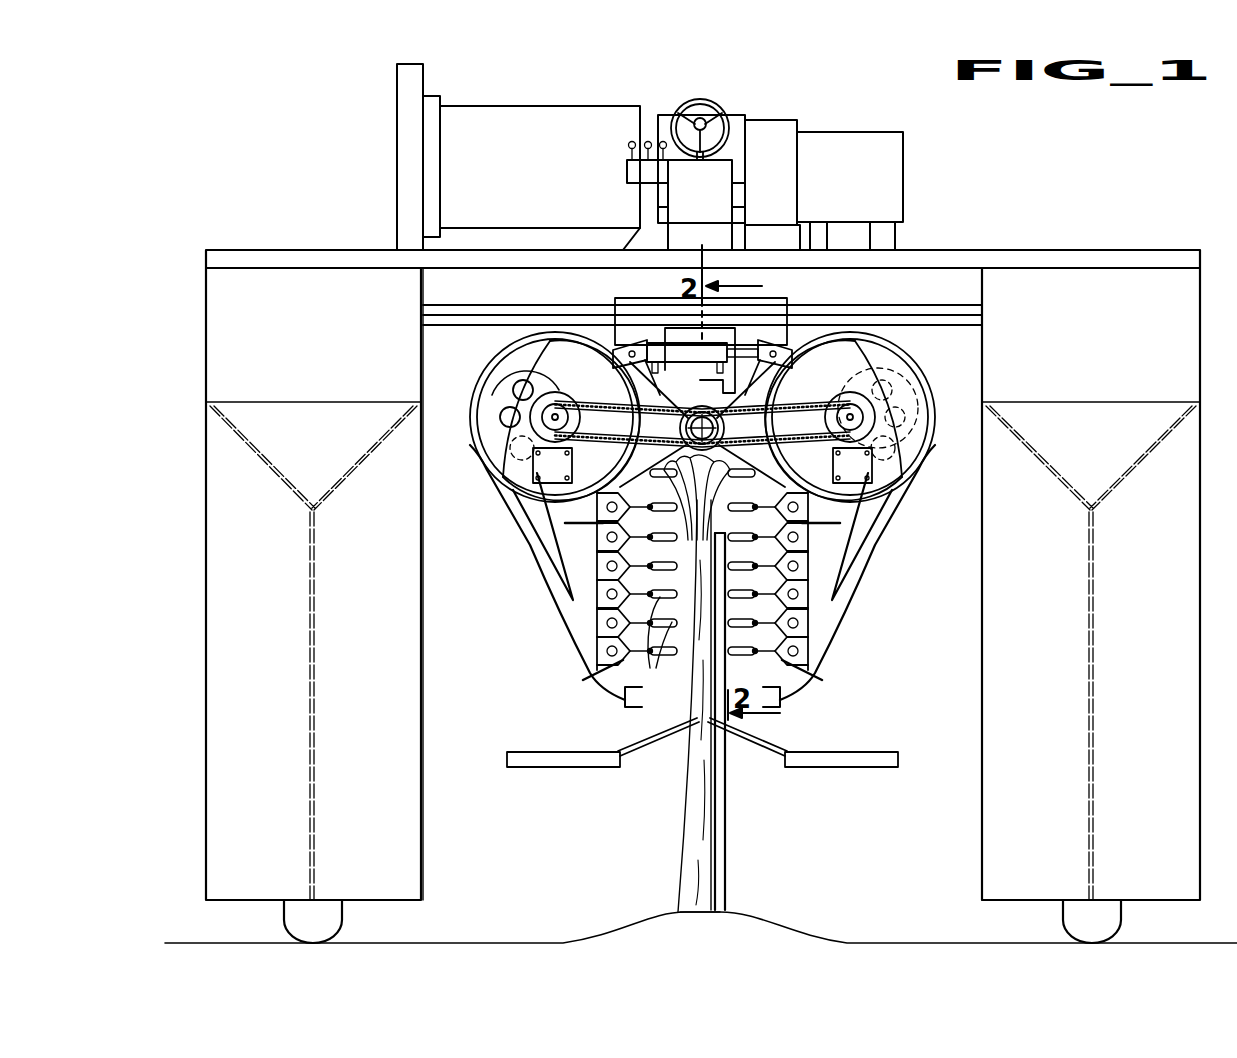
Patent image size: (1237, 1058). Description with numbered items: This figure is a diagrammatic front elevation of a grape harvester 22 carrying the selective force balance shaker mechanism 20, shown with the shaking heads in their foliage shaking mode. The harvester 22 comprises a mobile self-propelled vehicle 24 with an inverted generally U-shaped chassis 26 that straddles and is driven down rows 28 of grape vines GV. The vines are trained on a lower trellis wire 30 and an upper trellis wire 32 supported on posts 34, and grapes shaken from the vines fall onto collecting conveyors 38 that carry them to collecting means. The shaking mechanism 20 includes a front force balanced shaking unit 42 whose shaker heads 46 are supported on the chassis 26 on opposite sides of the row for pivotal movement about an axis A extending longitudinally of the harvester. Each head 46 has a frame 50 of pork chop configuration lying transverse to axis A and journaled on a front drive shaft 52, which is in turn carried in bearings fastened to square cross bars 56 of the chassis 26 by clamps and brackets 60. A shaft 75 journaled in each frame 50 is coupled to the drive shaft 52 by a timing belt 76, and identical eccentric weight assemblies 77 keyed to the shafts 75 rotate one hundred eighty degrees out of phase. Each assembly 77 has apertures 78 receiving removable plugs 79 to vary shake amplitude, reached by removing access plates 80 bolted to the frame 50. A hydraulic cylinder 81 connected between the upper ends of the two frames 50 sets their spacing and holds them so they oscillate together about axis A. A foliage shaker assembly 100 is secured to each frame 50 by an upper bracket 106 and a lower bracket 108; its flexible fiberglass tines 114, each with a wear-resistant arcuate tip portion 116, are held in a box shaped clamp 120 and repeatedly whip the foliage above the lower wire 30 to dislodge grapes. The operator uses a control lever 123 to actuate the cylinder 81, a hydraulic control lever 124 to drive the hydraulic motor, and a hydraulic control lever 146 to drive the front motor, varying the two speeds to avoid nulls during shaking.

The selective force balance shaker mechanism 20 is at (960, 353).
The grape harvester 22 is at (942, 193).
The mobile self-propelled vehicle 24 is at (1105, 247).
The chassis 26 is at (215, 331).
The rows 28 is at (677, 901).
The lower trellis wire 30 is at (782, 700).
The upper trellis wire 32 is at (720, 530).
The posts 34 is at (726, 825).
The collecting conveyors 38 is at (507, 757).
The front force balanced shaking unit 42 is at (936, 391).
The front shaker heads 46 is at (550, 618).
The frame 50 is at (530, 554).
The front drive shaft 52 is at (634, 450).
The square cross bars 56 is at (966, 310).
The brackets 60 is at (773, 303).
The shaft 75 is at (557, 414).
The timing belt 76 is at (612, 395).
The eccentric weight assemblies 77 is at (525, 366).
The apertures 78 is at (513, 390).
The removable weight or plug 79 is at (505, 421).
The access plates 80 is at (530, 488).
The hydraulic cylinder 81 is at (666, 345).
The foliage shaker assembly 100 is at (600, 657).
The upper bracket 106 is at (548, 527).
The lower bracket 108 is at (585, 682).
The flexible foliage beater rods or tines 114 is at (603, 568).
The arcuate tip portion 116 is at (735, 622).
The box shaped clamp 120 is at (603, 628).
The control lever 123 is at (628, 147).
The hydraulic control lever 124 is at (647, 142).
The hydraulic control lever 146 is at (663, 142).
The axis A is at (700, 417).
The grape vines GV is at (696, 827).